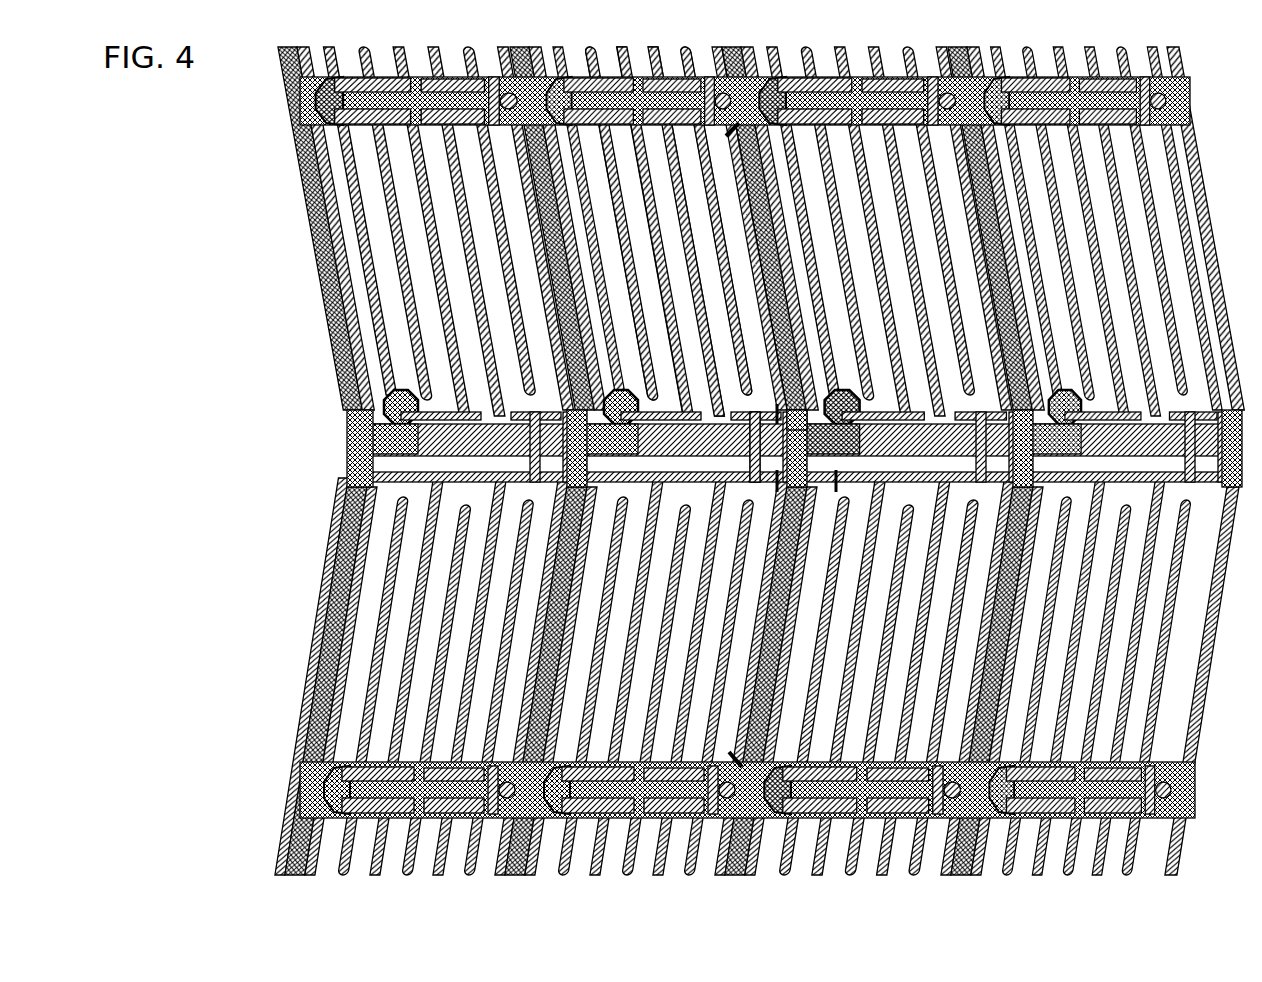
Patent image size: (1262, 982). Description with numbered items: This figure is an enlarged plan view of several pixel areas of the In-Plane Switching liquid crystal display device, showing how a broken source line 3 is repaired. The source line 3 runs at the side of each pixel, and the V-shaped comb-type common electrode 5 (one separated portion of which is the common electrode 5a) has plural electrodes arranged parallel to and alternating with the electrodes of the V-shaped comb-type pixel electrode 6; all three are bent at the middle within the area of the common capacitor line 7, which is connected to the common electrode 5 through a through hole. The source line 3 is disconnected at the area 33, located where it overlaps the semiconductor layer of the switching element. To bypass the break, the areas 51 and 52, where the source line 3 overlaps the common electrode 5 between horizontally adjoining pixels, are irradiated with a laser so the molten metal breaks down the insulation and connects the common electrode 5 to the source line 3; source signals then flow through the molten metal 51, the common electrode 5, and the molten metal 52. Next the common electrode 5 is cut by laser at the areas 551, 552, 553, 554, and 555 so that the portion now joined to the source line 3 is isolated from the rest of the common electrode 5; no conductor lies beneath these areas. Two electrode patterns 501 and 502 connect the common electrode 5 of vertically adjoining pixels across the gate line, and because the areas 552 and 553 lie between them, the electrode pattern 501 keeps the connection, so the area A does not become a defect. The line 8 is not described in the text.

The common capacitor line 7 is at (582, 76).
The common electrode 5 is at (550, 189).
The pixel electrode 6 is at (586, 220).
The source line 3 is at (560, 277).
The common electrode 5a is at (703, 248).
The area A is at (694, 283).
The area of the common electrode 51 is at (783, 343).
The area 33 is at (799, 423).
The area of the common electrode 552 is at (775, 412).
The common line 8 is at (936, 414).
The electrode pattern 501 is at (722, 462).
The electrode pattern 502 is at (757, 470).
The area of the common electrode 553 is at (775, 490).
The area of the common electrode 554 is at (838, 492).
The area of the common electrode 52 is at (797, 529).
The area of the common electrode 555 is at (736, 755).
The area of the common electrode 551 is at (752, 153).